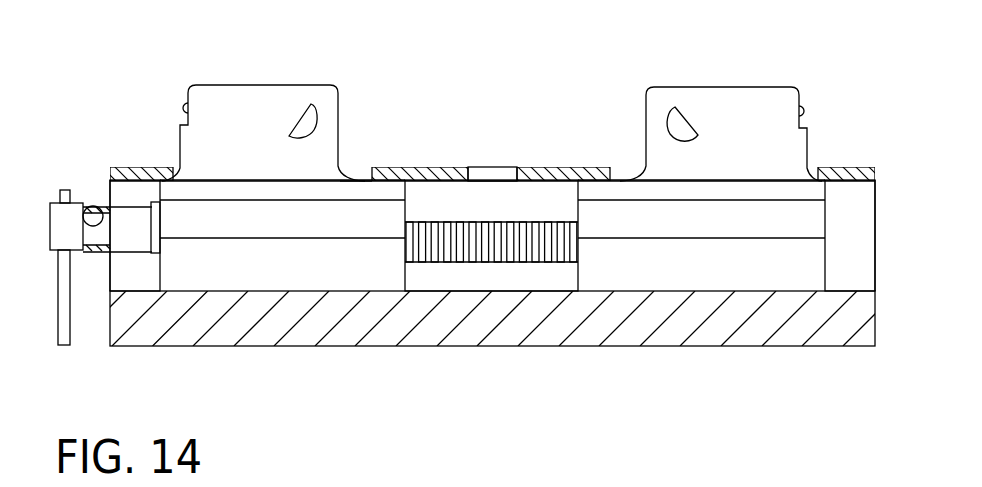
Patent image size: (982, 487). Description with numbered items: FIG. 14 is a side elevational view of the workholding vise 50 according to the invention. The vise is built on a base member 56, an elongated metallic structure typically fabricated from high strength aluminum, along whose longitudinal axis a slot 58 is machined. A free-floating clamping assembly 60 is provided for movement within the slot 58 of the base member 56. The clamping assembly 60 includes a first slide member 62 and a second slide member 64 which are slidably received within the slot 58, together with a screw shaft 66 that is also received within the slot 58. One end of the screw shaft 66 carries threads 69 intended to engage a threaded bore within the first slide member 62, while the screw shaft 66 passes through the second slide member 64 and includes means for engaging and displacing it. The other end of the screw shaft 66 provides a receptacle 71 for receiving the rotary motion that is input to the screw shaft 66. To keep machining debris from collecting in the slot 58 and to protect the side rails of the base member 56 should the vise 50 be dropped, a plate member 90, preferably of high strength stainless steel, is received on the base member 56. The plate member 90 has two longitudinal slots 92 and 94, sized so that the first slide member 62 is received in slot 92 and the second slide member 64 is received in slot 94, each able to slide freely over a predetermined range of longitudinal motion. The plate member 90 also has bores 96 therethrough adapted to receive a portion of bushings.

The workholding vise 50 is at (822, 353).
The base member 56 is at (725, 333).
The slot 58 is at (433, 283).
The clamping assembly 60 is at (817, 157).
The first slide member 62 is at (247, 98).
The second slide member 64 is at (700, 98).
The screw shaft 66 is at (128, 223).
The threads 69 is at (552, 262).
The receptacle 71 is at (77, 238).
The plate member 90 is at (578, 175).
The slot 92 is at (365, 172).
The slot 94 is at (620, 178).
The bores 96 is at (512, 172).